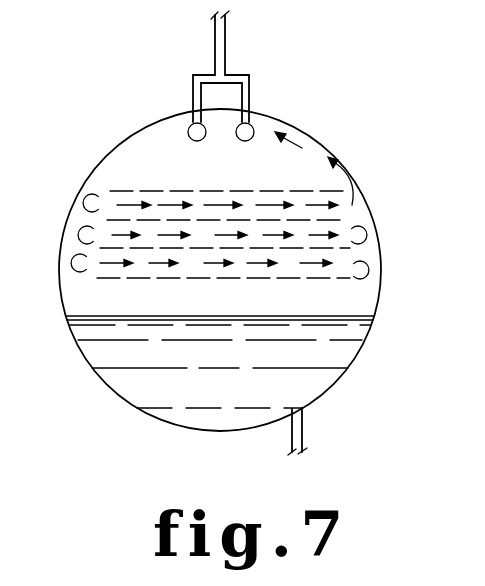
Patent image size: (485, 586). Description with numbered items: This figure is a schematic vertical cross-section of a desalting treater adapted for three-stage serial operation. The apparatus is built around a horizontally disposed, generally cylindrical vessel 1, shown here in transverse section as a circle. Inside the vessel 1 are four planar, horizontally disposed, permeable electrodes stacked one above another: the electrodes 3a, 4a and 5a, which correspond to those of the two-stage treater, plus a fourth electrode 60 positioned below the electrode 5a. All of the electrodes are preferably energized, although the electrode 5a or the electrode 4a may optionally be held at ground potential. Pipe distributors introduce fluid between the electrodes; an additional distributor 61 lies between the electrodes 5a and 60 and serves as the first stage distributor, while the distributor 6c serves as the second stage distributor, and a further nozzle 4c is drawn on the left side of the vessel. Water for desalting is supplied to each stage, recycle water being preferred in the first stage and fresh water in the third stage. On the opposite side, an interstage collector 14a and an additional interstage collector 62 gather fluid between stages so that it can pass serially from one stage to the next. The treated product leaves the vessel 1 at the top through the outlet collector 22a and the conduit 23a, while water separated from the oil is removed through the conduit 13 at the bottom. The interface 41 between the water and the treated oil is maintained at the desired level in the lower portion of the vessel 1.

The vessel 1 is at (138, 410).
The conduit 23a is at (226, 48).
The outlet collector 22a is at (200, 141).
The electrode 3a is at (183, 190).
The electrode 4a is at (338, 220).
The electrode 5a is at (208, 250).
The electrode 60 is at (330, 281).
The left inlet nozzle 4c is at (83, 203).
The distributor 6c is at (78, 237).
The distributor 61 is at (71, 263).
The interstage collector 14a is at (367, 236).
The interstage collector 62 is at (369, 272).
The interface 41 is at (257, 316).
The conduit 13 is at (303, 427).